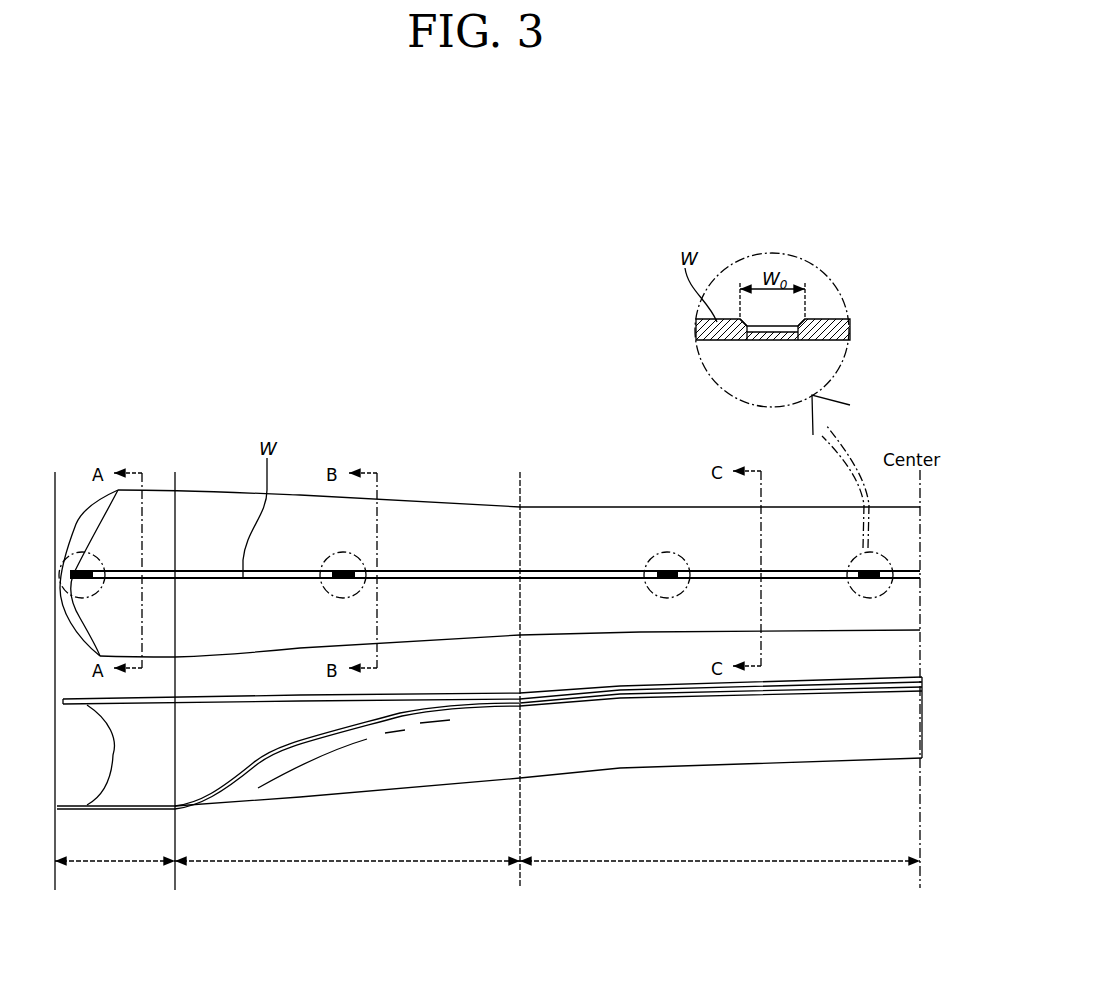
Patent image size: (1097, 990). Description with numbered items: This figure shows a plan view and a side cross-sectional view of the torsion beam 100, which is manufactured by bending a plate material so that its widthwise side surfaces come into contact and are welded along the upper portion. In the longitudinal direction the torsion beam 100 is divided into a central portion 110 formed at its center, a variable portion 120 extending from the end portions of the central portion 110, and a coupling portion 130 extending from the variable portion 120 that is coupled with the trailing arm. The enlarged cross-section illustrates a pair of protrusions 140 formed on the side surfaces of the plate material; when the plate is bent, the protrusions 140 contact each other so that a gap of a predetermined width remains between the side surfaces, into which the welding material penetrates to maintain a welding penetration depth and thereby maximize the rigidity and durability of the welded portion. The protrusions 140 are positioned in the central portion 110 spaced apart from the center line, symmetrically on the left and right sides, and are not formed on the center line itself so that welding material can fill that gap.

The torsion beam 100 is at (673, 503).
The central portion 110 is at (733, 863).
The variable portion 120 is at (357, 863).
The coupling portion 130 is at (118, 863).
The protrusion 140 is at (800, 324).